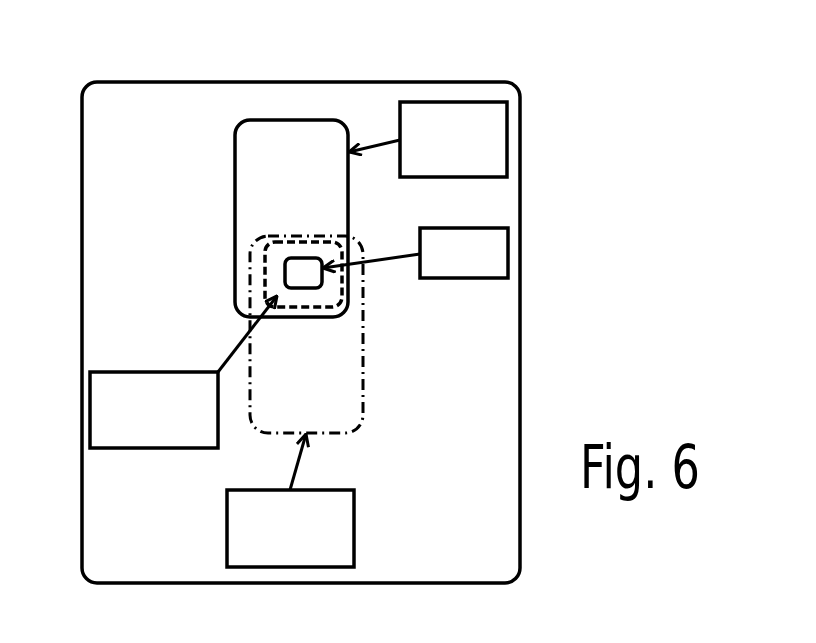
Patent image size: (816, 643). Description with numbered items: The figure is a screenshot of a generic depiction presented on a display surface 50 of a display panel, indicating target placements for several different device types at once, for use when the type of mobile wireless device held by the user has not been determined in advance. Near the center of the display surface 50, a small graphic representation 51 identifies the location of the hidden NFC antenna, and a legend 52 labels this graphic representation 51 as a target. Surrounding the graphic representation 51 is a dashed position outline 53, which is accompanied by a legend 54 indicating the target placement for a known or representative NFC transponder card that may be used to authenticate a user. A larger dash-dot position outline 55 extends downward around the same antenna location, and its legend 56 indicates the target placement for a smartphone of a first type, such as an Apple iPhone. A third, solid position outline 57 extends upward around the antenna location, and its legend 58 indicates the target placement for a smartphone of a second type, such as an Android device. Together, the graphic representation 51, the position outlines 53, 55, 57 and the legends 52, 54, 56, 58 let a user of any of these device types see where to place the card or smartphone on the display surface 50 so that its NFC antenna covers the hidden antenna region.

The display surface 50 is at (105, 128).
The graphic representation 51 is at (313, 288).
The legend 52 is at (485, 228).
The position outline 53 is at (272, 260).
The legend 54 is at (122, 372).
The position outline 55 is at (363, 363).
The legend 56 is at (355, 512).
The position outline 57 is at (262, 118).
The legend 58 is at (472, 102).